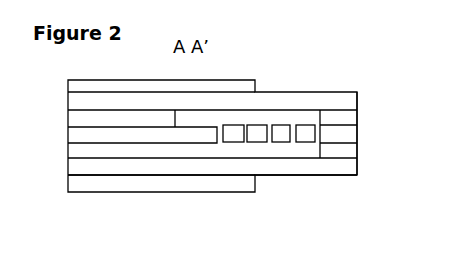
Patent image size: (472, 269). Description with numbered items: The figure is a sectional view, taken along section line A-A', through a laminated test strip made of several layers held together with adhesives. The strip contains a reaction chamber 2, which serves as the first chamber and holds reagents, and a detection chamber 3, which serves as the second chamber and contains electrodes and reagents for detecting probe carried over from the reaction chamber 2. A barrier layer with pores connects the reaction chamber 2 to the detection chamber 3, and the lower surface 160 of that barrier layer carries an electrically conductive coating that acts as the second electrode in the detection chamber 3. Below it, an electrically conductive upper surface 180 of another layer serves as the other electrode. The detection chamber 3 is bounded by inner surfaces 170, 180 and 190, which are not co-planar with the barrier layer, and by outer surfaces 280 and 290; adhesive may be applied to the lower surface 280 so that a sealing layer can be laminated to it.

The reaction chamber 2 is at (270, 112).
The detection chamber 3 is at (285, 153).
The lower surface 160 is at (303, 142).
The inner surface 170 is at (212, 152).
The electrically conductive upper surface 180 is at (235, 157).
The inner surface 190 is at (322, 148).
The lower surface 280 is at (269, 175).
The outer surface 290 is at (354, 152).